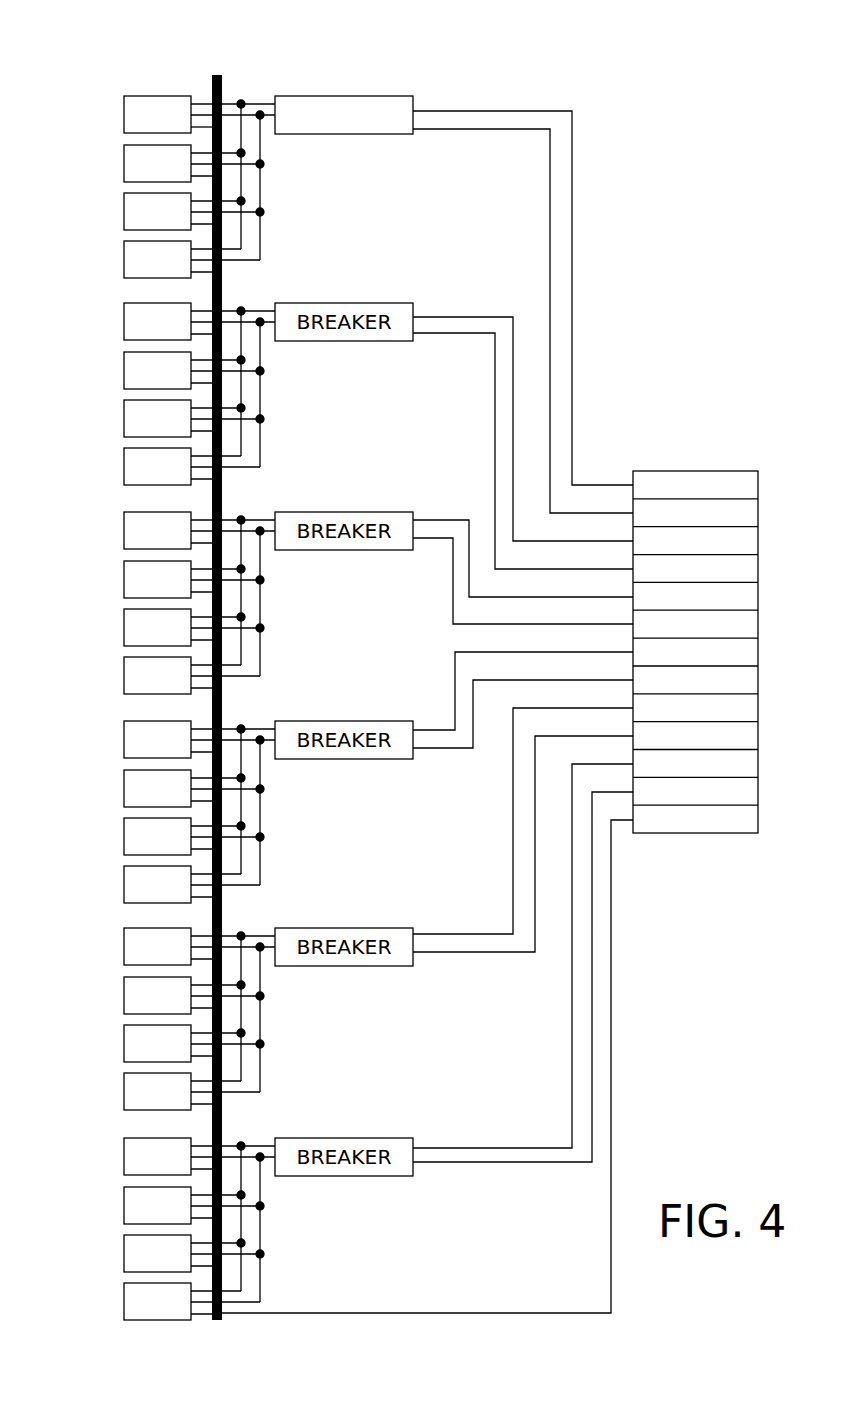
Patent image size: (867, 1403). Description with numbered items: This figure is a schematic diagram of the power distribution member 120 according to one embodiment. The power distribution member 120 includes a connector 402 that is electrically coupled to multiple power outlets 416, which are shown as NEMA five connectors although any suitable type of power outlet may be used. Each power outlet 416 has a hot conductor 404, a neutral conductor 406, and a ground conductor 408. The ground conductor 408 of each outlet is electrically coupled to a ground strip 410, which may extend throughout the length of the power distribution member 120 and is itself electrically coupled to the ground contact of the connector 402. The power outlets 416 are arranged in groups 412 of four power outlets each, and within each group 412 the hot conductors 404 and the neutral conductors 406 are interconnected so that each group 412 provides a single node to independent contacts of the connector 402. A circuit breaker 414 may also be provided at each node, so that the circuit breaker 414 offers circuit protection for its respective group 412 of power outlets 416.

The power distribution member 120 is at (299, 53).
The connector 402 is at (678, 471).
The hot conductor 404 is at (205, 103).
The neutral conductor 406 is at (227, 115).
The ground conductor 408 is at (204, 126).
The ground strip 410 is at (220, 918).
The group 412 is at (98, 304).
The circuit breaker 414 is at (345, 96).
The power outlet 416 is at (124, 130).